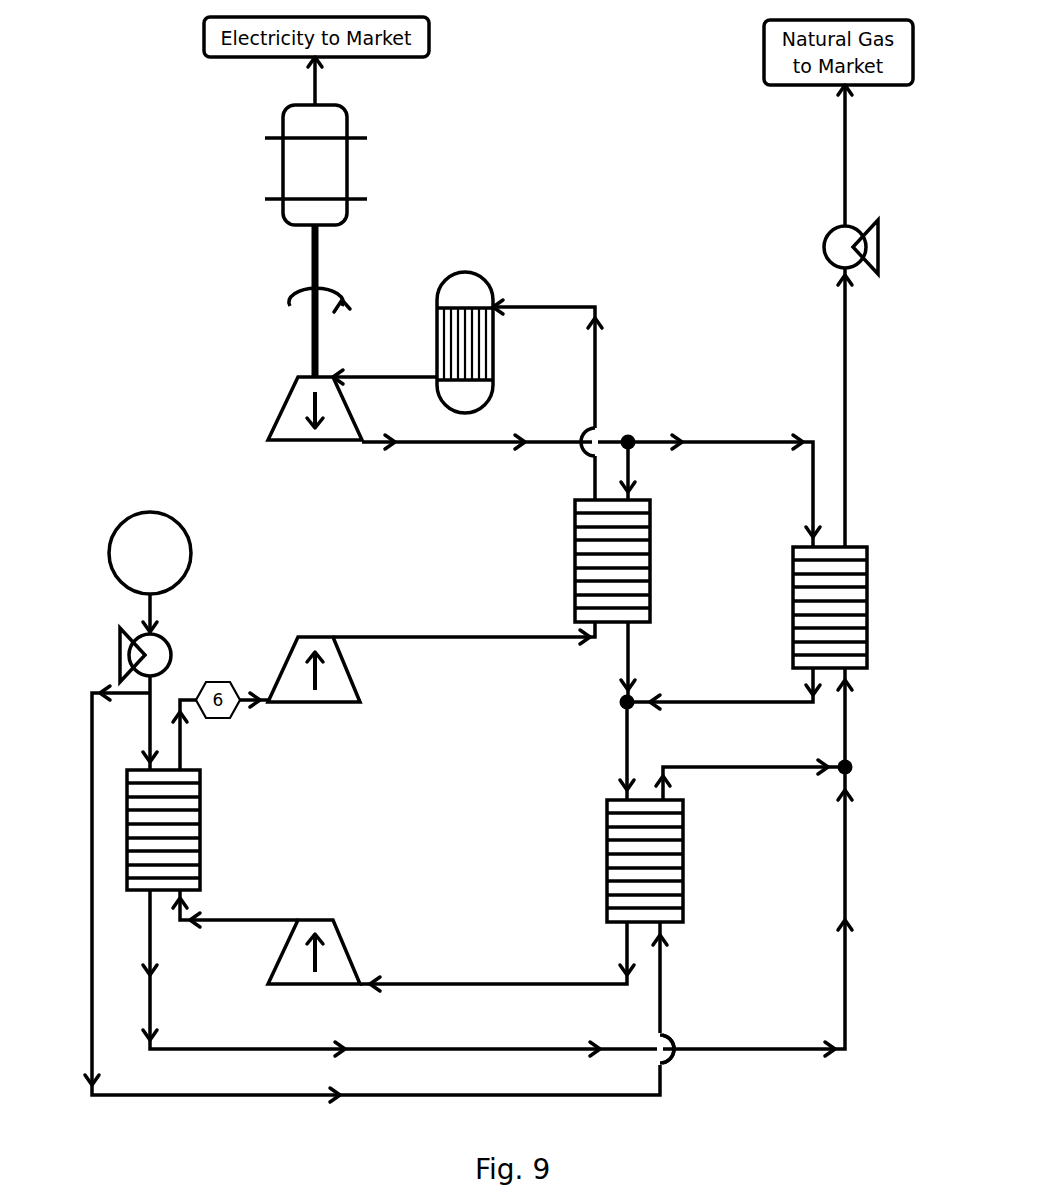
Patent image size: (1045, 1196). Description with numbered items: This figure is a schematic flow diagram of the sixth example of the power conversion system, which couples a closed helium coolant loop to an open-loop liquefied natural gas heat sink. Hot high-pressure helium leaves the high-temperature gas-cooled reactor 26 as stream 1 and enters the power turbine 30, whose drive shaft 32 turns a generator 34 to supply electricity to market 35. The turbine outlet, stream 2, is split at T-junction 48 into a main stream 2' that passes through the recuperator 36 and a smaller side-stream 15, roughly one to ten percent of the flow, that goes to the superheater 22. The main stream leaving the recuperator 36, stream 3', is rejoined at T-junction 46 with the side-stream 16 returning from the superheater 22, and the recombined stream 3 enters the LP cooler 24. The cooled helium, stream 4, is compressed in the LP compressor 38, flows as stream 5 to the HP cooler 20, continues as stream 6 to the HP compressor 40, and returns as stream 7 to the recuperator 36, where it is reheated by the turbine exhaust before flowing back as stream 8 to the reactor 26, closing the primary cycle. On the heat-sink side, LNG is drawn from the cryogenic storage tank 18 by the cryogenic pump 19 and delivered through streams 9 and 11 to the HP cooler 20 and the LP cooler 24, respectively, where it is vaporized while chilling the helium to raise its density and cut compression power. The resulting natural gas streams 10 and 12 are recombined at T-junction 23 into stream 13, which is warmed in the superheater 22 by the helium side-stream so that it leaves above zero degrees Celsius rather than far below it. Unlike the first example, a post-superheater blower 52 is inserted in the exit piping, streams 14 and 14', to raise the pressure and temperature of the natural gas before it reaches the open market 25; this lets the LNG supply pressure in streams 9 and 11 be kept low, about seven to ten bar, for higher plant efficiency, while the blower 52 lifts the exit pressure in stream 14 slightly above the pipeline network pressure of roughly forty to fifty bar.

The stream # 6 is at (585, 100).
The cryogenic storage tank 18 is at (116, 520).
The cryogenic pump 19 is at (115, 645).
The high-pressure (HP) cooler 20 is at (207, 811).
The superheater 22 is at (873, 613).
The T-junction 23 is at (857, 775).
The low-pressure (LP) cooler 24 is at (690, 862).
The open market 25 is at (884, 155).
The high-temperature gas-cooled nuclear reactor 26 is at (488, 272).
The power turbine 30 is at (275, 410).
The drive shaft 32 is at (307, 290).
The generator 34 is at (277, 168).
The electricity to market 35 is at (381, 81).
The recuperator 36 is at (655, 573).
The low-pressure (LP) compressor 38 is at (355, 947).
The high-pressure (HP) compressor 40 is at (280, 665).
The T-junction 46 is at (617, 708).
The T-junction 48 is at (636, 426).
The post-superheater blower 52 is at (815, 230).
The stream # 1 is at (365, 377).
The stream # 2 is at (591, 485).
The stream # 2' is at (668, 475).
The stream # 3 is at (627, 751).
The stream 3' is at (628, 662).
The stream # 4 is at (466, 984).
The stream # 5 is at (225, 920).
The stream # 7 is at (433, 637).
The stream # 8 is at (526, 307).
The stream # 9 is at (128, 728).
The stream # 10 is at (425, 1049).
The stream # 11 is at (216, 1095).
The stream # 12 is at (723, 767).
The stream # 13 is at (823, 722).
The stream # 14 is at (845, 407).
The stream # 14' is at (845, 162).
The stream # 15 is at (713, 442).
The stream # 16 is at (711, 702).